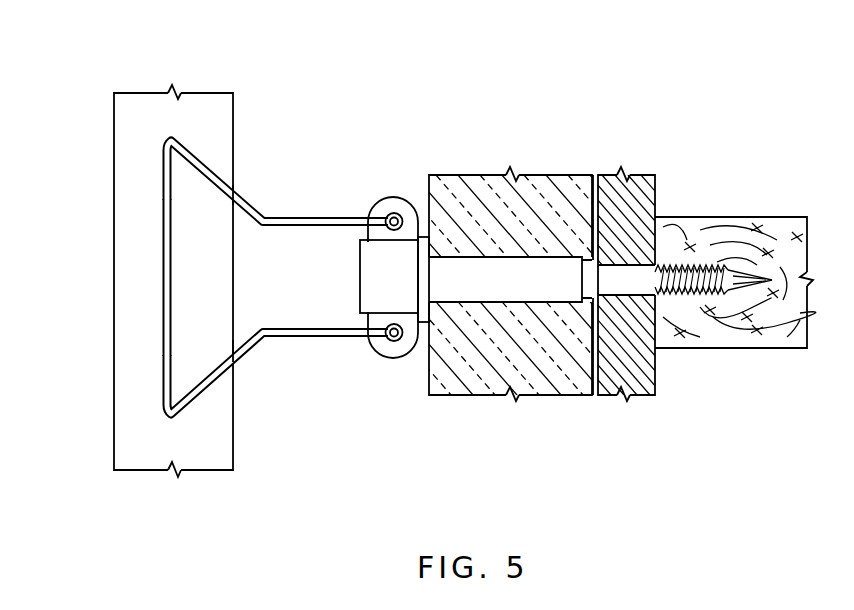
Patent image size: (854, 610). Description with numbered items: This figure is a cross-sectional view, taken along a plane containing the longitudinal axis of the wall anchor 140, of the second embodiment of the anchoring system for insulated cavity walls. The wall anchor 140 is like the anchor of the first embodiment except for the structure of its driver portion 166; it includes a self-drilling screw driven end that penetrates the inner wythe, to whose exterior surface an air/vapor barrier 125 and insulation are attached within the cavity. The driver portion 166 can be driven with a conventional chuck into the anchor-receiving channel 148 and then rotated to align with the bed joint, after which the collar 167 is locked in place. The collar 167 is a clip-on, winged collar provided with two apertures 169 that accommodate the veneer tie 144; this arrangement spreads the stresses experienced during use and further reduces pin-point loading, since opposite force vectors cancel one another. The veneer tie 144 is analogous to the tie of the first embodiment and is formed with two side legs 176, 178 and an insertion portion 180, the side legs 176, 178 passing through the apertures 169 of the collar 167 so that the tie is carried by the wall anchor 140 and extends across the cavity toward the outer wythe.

The air/vapor barrier 125 is at (596, 175).
The wall anchor 140 is at (473, 277).
The veneer tie 144 is at (277, 250).
The anchor-receiving channel 148 is at (520, 304).
The driver portion 166 is at (358, 288).
The collar 167 is at (398, 352).
The apertures 169 is at (408, 200).
The side leg 176 is at (252, 196).
The side leg 178 is at (250, 352).
The insertion portion 180 is at (160, 227).